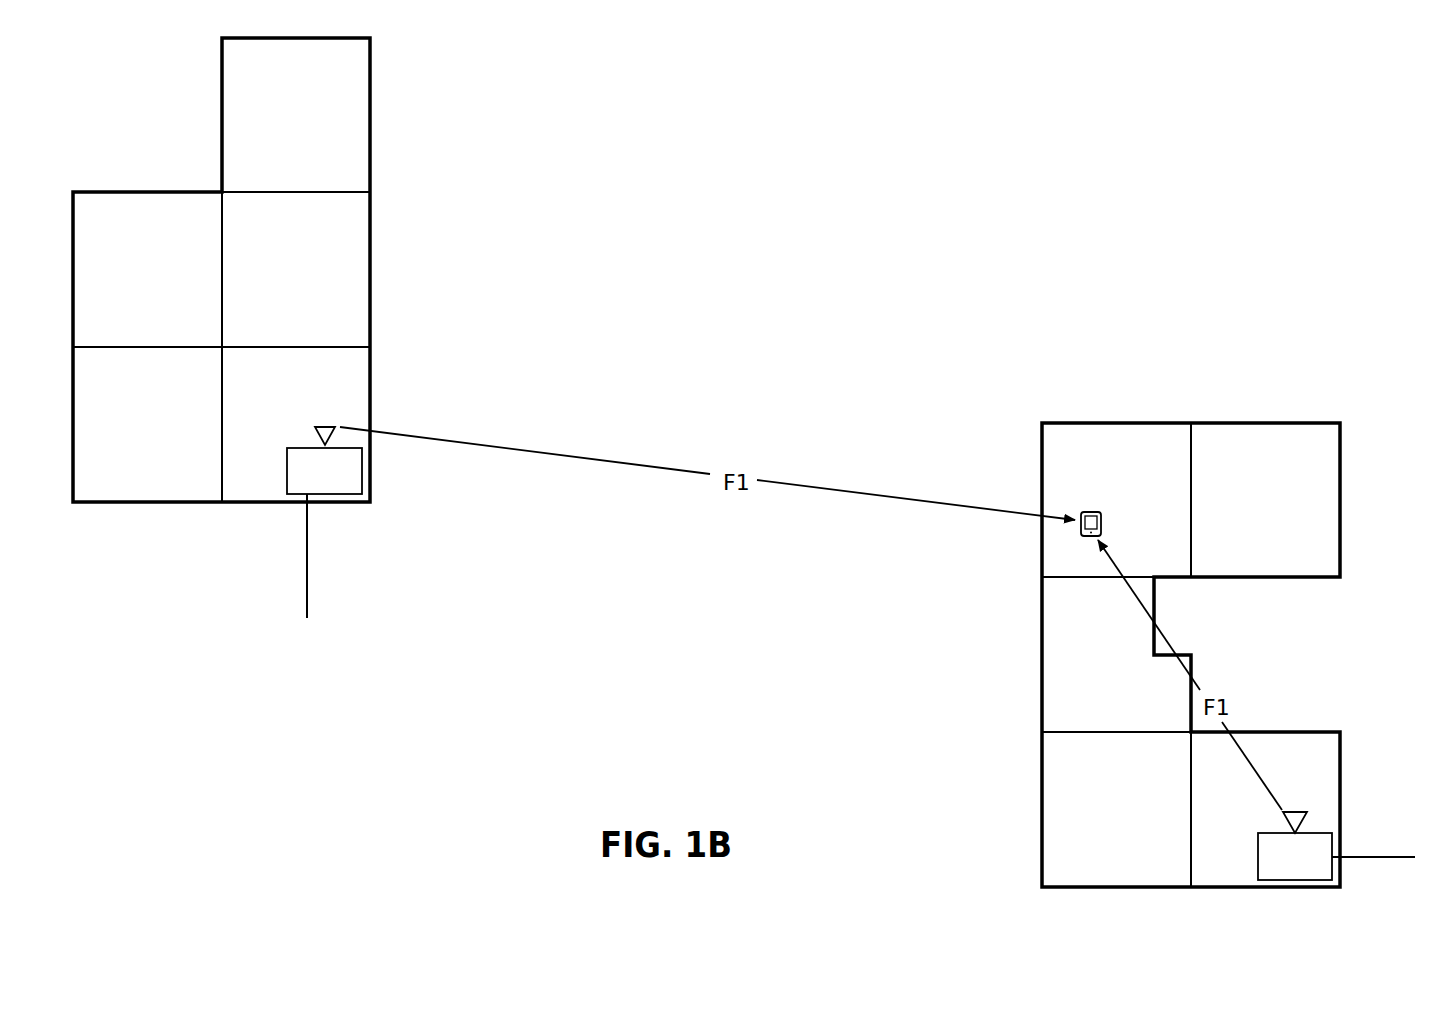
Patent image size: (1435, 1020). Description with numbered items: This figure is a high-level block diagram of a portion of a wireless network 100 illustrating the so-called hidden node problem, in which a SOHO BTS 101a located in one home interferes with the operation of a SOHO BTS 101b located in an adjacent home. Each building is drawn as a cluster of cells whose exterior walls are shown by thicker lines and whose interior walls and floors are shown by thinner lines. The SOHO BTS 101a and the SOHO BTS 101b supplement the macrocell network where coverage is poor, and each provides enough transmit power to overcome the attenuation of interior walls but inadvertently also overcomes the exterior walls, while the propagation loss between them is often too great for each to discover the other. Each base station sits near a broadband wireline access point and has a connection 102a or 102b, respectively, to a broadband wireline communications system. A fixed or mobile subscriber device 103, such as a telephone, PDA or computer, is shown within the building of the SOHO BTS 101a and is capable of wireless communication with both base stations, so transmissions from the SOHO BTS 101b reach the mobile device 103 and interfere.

The network 100 is at (700, 656).
The SOHO BTS 101a is at (1290, 890).
The SOHO BTS 101b is at (298, 447).
The connection 102a is at (1377, 853).
The connection 102b is at (307, 565).
The mobile device 103 is at (1090, 512).